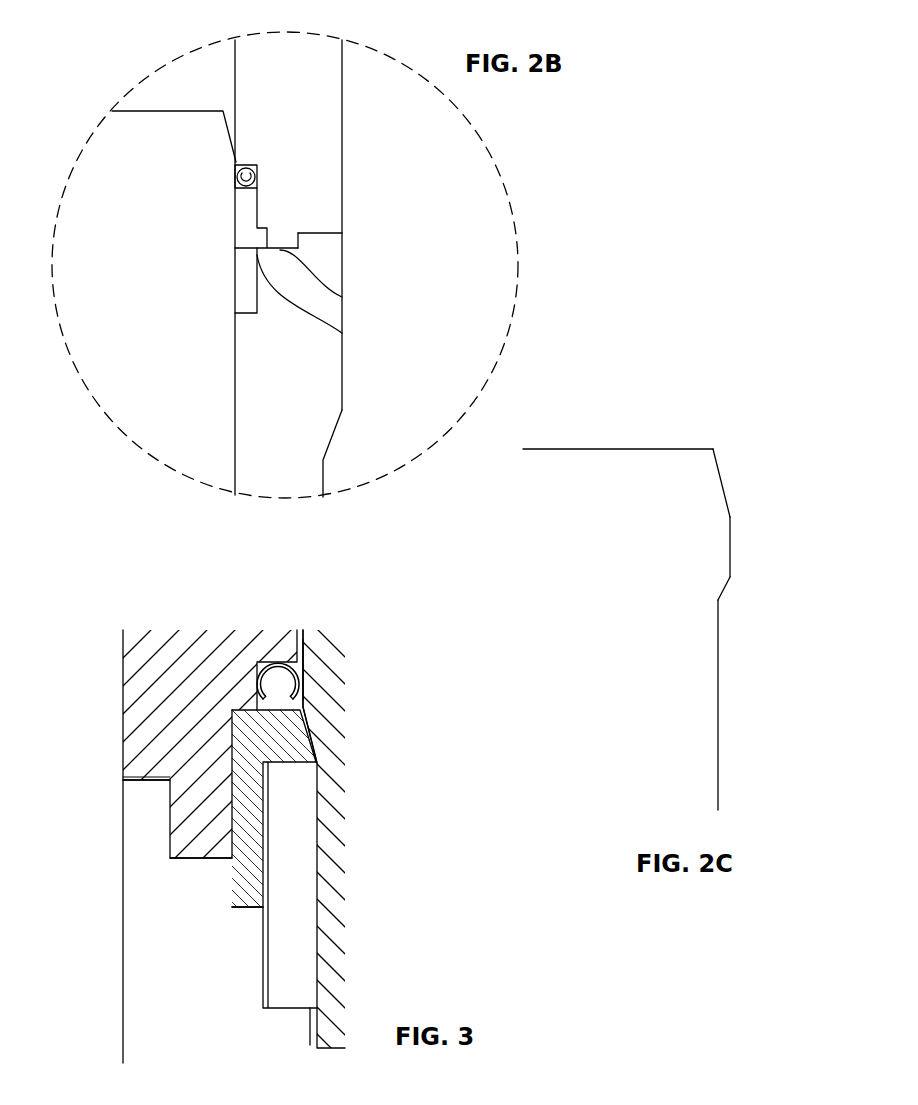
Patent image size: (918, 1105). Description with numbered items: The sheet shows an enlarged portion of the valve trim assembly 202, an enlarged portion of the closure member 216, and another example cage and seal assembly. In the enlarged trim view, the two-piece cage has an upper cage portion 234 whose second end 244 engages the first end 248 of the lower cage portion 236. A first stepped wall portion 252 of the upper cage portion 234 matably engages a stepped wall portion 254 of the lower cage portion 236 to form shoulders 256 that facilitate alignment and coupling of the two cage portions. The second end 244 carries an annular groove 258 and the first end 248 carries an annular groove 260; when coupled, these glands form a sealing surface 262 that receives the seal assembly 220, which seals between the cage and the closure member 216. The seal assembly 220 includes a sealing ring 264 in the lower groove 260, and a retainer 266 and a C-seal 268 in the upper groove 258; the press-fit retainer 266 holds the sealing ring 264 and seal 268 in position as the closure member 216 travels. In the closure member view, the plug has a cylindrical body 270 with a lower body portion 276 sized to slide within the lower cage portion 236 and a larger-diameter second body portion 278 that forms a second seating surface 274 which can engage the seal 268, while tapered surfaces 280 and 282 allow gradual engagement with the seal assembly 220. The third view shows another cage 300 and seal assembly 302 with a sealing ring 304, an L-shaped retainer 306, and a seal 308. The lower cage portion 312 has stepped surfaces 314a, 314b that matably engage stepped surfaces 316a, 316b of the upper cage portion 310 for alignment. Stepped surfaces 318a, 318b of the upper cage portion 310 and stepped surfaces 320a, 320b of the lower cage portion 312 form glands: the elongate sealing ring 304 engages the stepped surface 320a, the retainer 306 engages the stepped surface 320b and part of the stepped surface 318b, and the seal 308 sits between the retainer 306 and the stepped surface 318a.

In FIG. 2B, the valve trim assembly 202 is at (103, 78).
In FIG. 2B, the closure member 216 is at (182, 110).
In FIG. 2C, the closure member 216 is at (613, 522).
In FIG. 3, the closure member 216 is at (337, 940).
In FIG. 2B, the seal assembly 220 is at (100, 163).
In FIG. 2B, the upper cage portion 234 is at (270, 67).
In FIG. 2B, the lower cage portion 236 is at (310, 415).
In FIG. 2B, the second end 244 is at (323, 192).
In FIG. 2B, the first end 248 is at (260, 328).
In FIG. 2B, the first stepped wall portion 252 is at (315, 232).
In FIG. 2B, the stepped wall portion 254 is at (342, 297).
In FIG. 2B, the shoulders 256 is at (296, 236).
In FIG. 2B, the annular groove 258 is at (256, 172).
In FIG. 2B, the annular groove 260 is at (342, 333).
In FIG. 2B, the sealing surface 262 is at (225, 165).
In FIG. 2B, the sealing ring 264 is at (246, 283).
In FIG. 2B, the retainer 266 is at (246, 222).
In FIG. 2B, the seal 268 is at (256, 180).
In FIG. 2C, the cylindrical body 270 is at (600, 449).
In FIG. 2C, the second seating surface 274 is at (732, 567).
In FIG. 2C, the lower body portion 276 is at (718, 665).
In FIG. 3, the lower body portion 276 is at (317, 897).
In FIG. 2C, the second body portion 278 is at (732, 535).
In FIG. 3, the second body portion 278 is at (305, 662).
In FIG. 2C, the tapered surface 280 is at (730, 583).
In FIG. 2C, the tapered surface 282 is at (722, 480).
In FIG. 3, the cage 300 is at (94, 851).
In FIG. 3, the seal assembly 302 is at (310, 607).
In FIG. 3, the sealing ring 304 is at (302, 845).
In FIG. 3, the retainer 306 is at (293, 738).
In FIG. 3, the seal 308 is at (298, 686).
In FIG. 3, the upper cage portion 310 is at (135, 705).
In FIG. 3, the lower cage portion 312 is at (142, 978).
In FIG. 3, the stepped surface 314a is at (130, 783).
In FIG. 3, the stepped surface 314b is at (180, 858).
In FIG. 3, the stepped surface 316a is at (137, 777).
In FIG. 3, the stepped surface 316b is at (200, 855).
In FIG. 3, the stepped surface 318a is at (265, 660).
In FIG. 3, the stepped surface 318b is at (253, 703).
In FIG. 3, the stepped surface 320a is at (285, 1008).
In FIG. 3, the stepped surface 320b is at (247, 907).